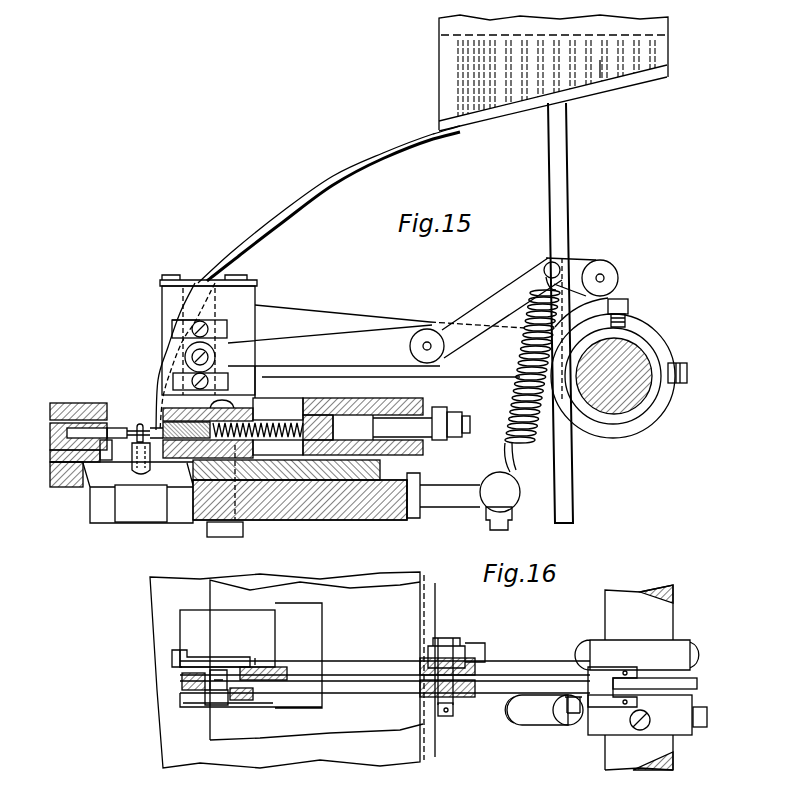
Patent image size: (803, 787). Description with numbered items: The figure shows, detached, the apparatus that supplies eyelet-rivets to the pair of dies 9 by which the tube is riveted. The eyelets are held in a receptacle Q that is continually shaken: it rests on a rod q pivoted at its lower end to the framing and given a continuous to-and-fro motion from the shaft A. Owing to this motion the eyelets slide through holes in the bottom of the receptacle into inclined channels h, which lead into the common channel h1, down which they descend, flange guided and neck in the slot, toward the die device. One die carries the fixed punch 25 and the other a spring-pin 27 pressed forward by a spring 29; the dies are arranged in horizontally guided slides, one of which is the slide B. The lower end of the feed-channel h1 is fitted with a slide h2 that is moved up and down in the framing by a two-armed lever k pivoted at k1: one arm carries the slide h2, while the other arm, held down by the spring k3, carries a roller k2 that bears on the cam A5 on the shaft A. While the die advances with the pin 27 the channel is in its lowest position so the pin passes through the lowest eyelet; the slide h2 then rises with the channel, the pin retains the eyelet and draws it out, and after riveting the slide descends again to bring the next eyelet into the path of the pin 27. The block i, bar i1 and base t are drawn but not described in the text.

In FIG. 15, the receptacle Q is at (540, 73).
In FIG. 15, the inclined channels h is at (604, 80).
In FIG. 15, the common channel h1 is at (327, 182).
In FIG. 16, the common channel h1 is at (168, 649).
In FIG. 15, the slide h2 is at (192, 307).
In FIG. 16, the slide h2 is at (208, 663).
In FIG. 15, the slide block i is at (208, 335).
In FIG. 16, the slide block i is at (272, 642).
In FIG. 15, the guide bar i1 is at (302, 320).
In FIG. 16, the guide bar i1 is at (348, 671).
In FIG. 15, the two-armed lever k is at (395, 328).
In FIG. 16, the two-armed lever k is at (361, 697).
In FIG. 15, the pivot k1 is at (432, 348).
In FIG. 16, the pivot k1 is at (446, 718).
In FIG. 15, the roller k2 is at (618, 276).
In FIG. 16, the roller k2 is at (630, 686).
In FIG. 15, the spring k3 is at (520, 385).
In FIG. 16, the spring k3 is at (545, 725).
In FIG. 15, the shaft A is at (642, 355).
In FIG. 16, the shaft A is at (665, 622).
In FIG. 15, the cam A5 is at (576, 340).
In FIG. 16, the cam A5 is at (697, 683).
In FIG. 15, the rod q is at (570, 478).
In FIG. 15, the slide B is at (342, 402).
In FIG. 15, the dies 9 is at (78, 404).
In FIG. 15, the fixed punch 25 is at (116, 426).
In FIG. 15, the spring-pin 27 is at (147, 422).
In FIG. 15, the spring 29 is at (276, 440).
In FIG. 15, the base block t is at (137, 478).